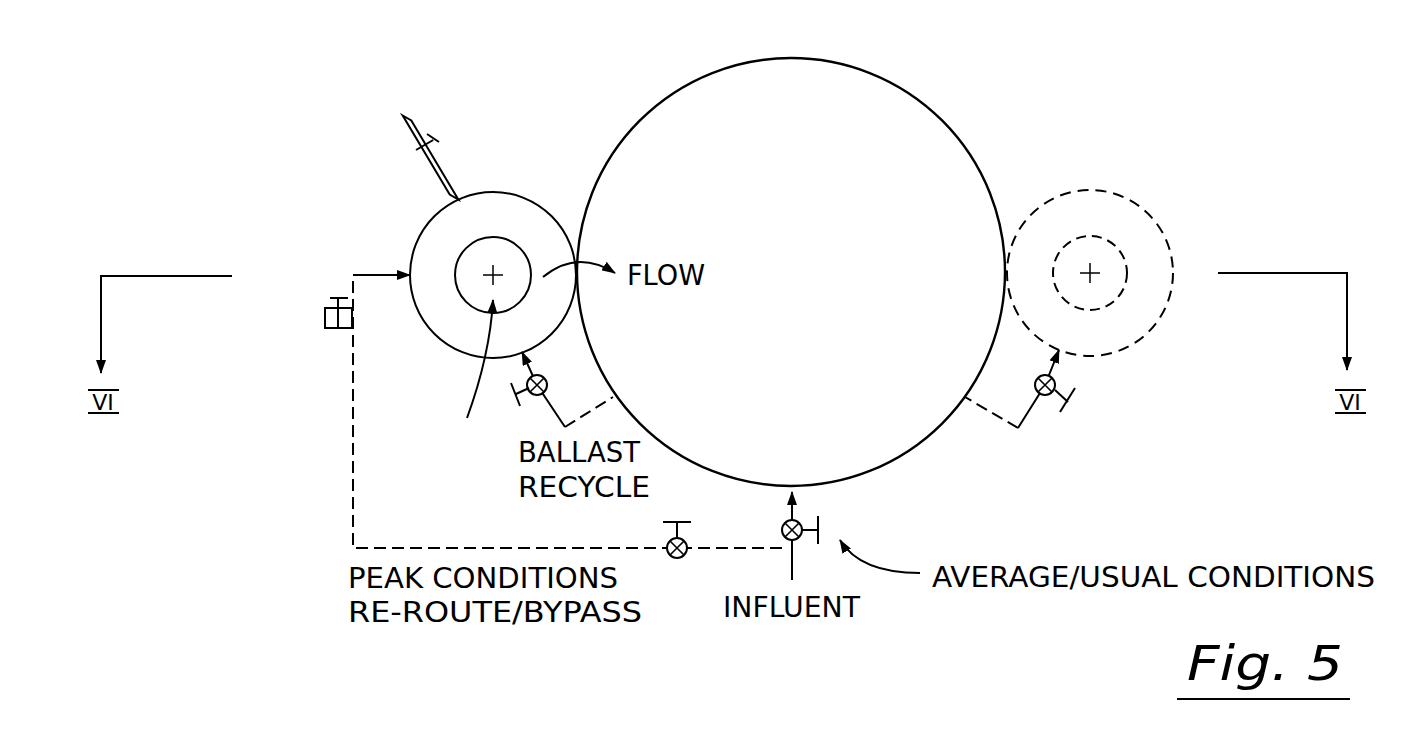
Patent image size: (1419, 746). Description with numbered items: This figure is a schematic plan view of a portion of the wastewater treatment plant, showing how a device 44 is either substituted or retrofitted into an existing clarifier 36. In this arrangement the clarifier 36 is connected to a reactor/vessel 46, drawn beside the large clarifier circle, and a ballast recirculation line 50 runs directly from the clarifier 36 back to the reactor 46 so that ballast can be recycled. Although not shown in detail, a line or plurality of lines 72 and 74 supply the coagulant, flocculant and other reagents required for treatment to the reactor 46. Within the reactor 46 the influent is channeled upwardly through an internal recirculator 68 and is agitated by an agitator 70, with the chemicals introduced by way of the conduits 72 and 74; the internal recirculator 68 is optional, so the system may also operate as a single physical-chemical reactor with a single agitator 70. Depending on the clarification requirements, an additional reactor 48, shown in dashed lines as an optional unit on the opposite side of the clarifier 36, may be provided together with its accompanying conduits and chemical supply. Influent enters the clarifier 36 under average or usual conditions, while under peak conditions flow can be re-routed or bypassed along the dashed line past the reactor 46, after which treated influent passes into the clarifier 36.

The clarifier 36 is at (818, 324).
The device 44 is at (667, 83).
The reactor/vessel 46 is at (523, 190).
The additional reactor 48 is at (1125, 188).
The ballast recirculation line 50 is at (562, 388).
The internal recirculator 68 is at (463, 248).
The agitator 70 is at (471, 375).
The line 72 is at (532, 411).
The line 74 is at (416, 141).